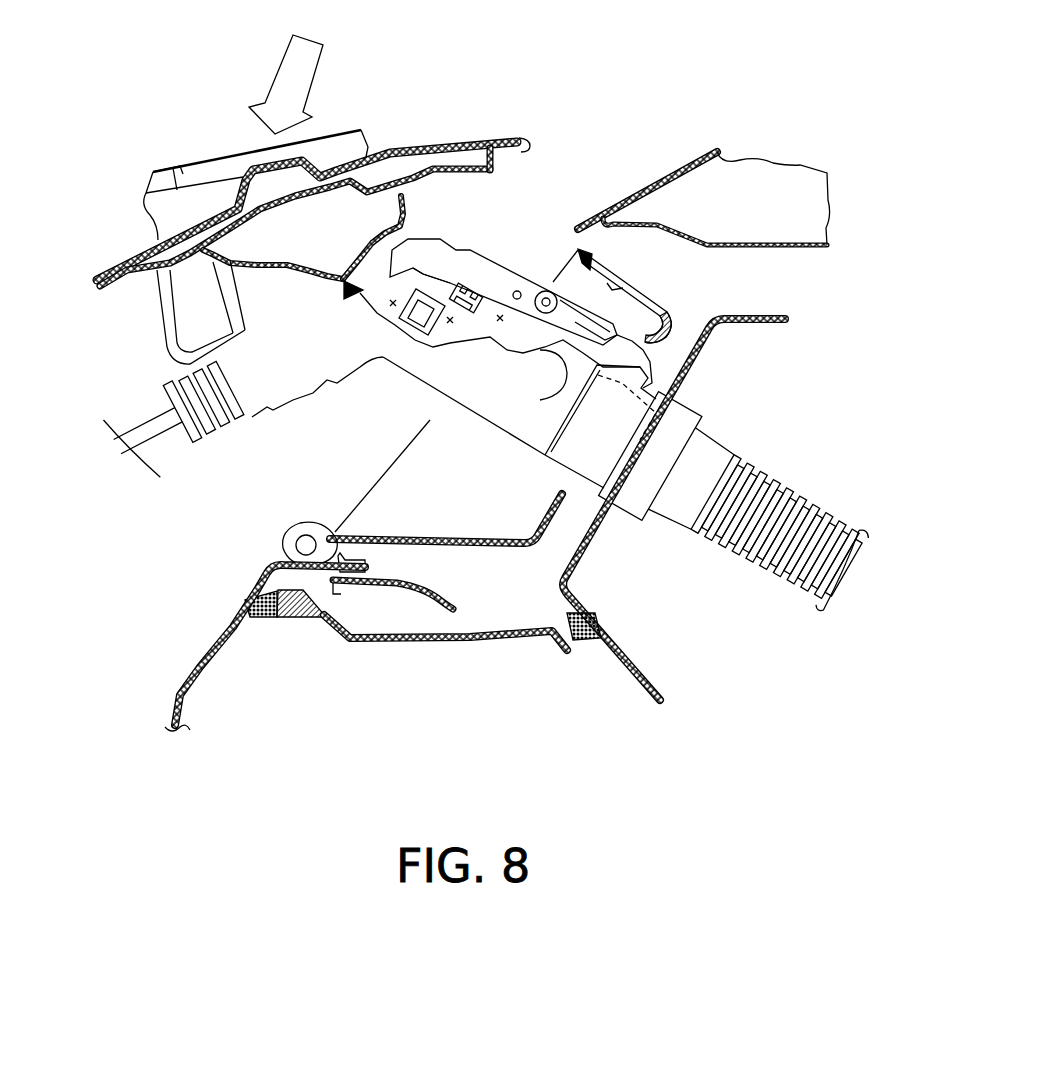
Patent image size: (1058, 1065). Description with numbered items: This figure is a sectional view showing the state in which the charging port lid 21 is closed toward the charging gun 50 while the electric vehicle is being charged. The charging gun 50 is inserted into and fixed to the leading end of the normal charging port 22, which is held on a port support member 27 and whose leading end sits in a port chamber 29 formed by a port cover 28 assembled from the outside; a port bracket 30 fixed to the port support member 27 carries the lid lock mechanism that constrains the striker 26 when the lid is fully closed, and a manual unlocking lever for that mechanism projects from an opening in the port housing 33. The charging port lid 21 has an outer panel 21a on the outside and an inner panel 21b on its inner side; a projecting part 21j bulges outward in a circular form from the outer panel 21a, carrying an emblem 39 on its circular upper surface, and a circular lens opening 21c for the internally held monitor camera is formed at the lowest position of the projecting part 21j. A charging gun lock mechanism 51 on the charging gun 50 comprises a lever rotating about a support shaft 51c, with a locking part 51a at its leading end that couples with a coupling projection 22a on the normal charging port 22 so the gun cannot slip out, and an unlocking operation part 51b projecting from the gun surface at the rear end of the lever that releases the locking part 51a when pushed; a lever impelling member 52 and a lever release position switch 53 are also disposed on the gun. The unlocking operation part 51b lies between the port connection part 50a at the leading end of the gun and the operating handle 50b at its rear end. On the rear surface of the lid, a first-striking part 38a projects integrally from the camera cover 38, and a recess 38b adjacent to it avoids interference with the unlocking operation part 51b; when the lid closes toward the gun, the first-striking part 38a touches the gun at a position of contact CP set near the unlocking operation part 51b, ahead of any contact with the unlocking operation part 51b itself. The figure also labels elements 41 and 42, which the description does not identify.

The charging port lid 21 is at (413, 118).
The outer panel 21a is at (450, 130).
The inner panel 21b is at (437, 173).
The lens opening 21c is at (150, 210).
The projecting part 21j is at (175, 178).
The emblem 39 is at (205, 160).
The camera cover 38 is at (344, 290).
The first-striking part 38a is at (298, 266).
The recess 38b is at (385, 241).
The striker 26 is at (150, 313).
The position of contact CP is at (356, 303).
The charging gun 50 is at (417, 380).
The port connection part 50a is at (583, 437).
The operating handle 50b is at (287, 367).
The lever release position switch 53 is at (375, 348).
The lever impelling member 52 is at (462, 318).
The charging gun lock mechanism 51 is at (500, 277).
The locking part 51a is at (630, 361).
The unlocking operation part 51b is at (441, 258).
The support shaft 51c is at (518, 291).
The roof panel 41 is at (657, 178).
The port cover 28 is at (632, 318).
The port chamber 29 is at (655, 296).
The normal charging port 22 is at (655, 452).
The coupling projection 22a is at (584, 386).
The port support member 27 is at (640, 660).
The body panel 42 is at (180, 685).
The port housing 33 is at (310, 620).
The port bracket 30 is at (402, 620).